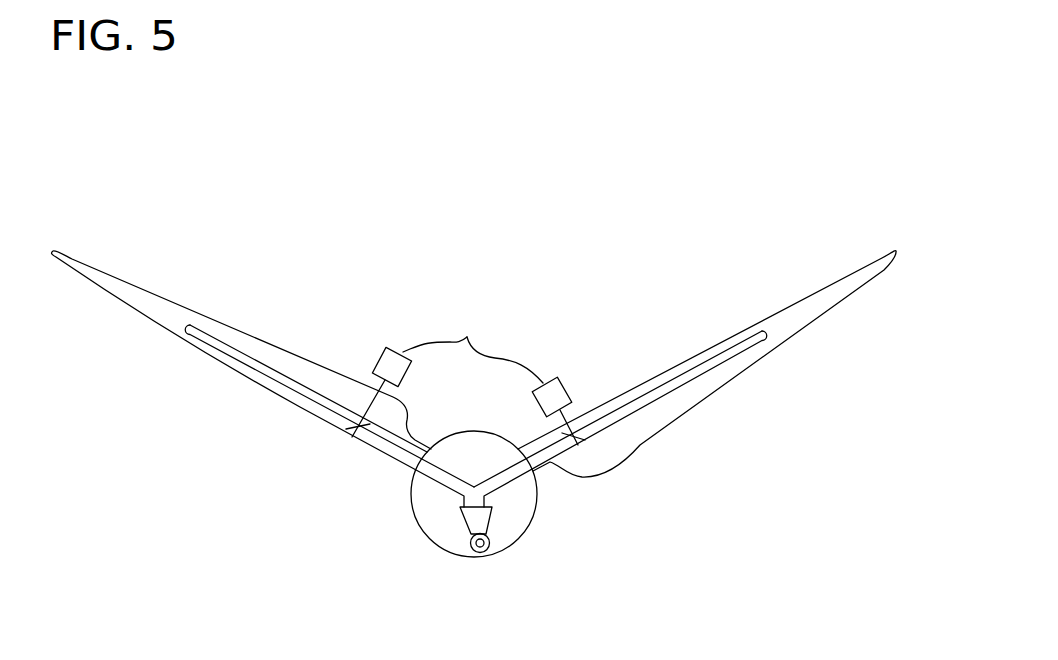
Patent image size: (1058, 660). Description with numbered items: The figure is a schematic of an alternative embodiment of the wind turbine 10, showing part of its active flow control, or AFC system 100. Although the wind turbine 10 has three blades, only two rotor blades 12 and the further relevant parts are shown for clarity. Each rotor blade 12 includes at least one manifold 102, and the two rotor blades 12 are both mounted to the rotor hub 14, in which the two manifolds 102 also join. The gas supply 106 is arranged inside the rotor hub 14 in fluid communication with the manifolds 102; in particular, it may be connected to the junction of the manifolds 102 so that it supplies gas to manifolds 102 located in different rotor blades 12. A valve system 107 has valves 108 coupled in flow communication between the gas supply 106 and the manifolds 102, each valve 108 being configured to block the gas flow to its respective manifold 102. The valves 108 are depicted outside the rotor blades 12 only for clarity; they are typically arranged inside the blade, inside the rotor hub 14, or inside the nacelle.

The wind turbine 10 is at (742, 169).
The rotor blade 12 is at (198, 348).
The rotor hub 14 is at (541, 505).
The AFC system 100 is at (597, 559).
The manifold 102 is at (238, 352).
The gas supply 106 is at (488, 551).
The valve system 107 is at (584, 365).
The valve 108 is at (467, 337).